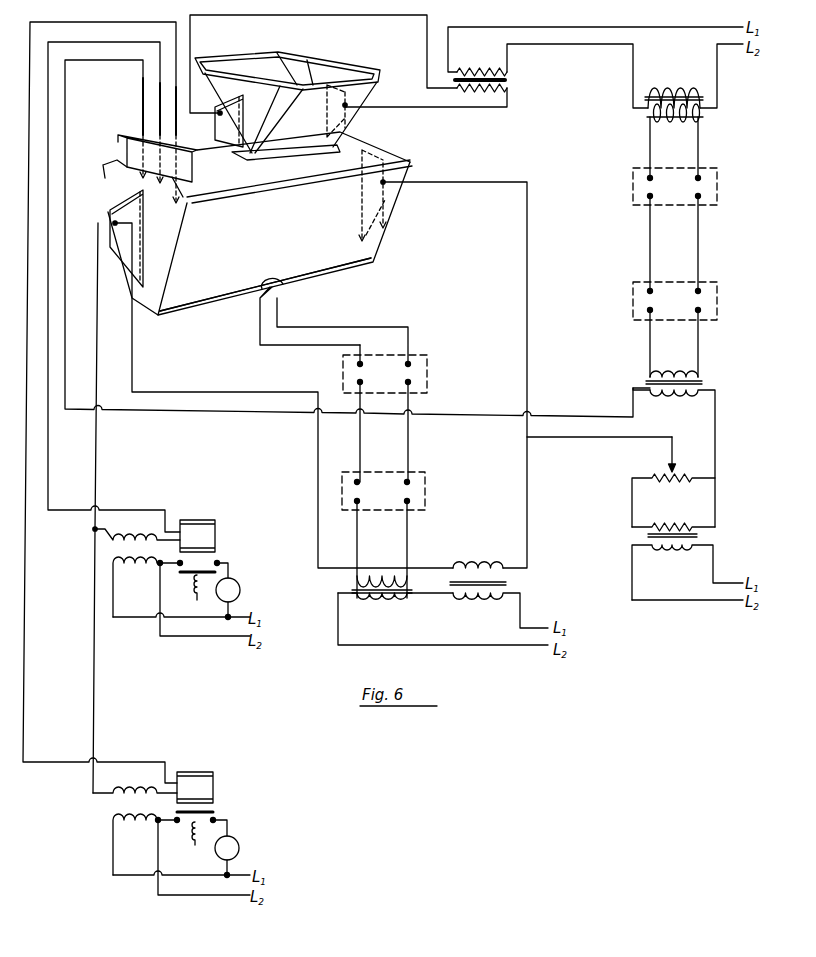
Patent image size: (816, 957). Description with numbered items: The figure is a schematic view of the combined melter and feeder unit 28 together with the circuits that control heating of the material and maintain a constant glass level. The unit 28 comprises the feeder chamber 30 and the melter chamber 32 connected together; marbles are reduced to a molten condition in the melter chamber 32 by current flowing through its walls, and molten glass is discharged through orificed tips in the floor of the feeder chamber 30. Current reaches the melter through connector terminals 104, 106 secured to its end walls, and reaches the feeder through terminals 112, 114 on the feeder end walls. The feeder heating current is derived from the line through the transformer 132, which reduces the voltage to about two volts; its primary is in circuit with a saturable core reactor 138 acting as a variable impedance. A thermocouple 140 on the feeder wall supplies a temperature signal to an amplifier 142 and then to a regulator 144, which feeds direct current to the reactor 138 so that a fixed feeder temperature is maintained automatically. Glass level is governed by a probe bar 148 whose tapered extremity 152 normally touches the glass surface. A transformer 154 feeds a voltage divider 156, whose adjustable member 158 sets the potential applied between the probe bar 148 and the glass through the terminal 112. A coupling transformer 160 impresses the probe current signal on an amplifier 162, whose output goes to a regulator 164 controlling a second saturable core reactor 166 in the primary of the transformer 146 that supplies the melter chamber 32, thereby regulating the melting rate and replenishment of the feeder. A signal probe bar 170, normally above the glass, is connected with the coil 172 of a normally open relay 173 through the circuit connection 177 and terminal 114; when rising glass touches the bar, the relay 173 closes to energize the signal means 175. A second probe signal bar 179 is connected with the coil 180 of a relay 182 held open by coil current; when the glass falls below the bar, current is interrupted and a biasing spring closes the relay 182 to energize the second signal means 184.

The combined melter and feeder unit 28 is at (360, 271).
The feeder chamber 30 is at (287, 243).
The melter chamber 32 is at (340, 43).
The connector terminal 104 is at (368, 95).
The connector terminal 106 is at (220, 125).
The terminal 112 is at (378, 214).
The terminal 114 is at (117, 203).
The transformer 132 is at (516, 584).
The saturable core reactor 138 is at (352, 584).
The thermocouple 140 is at (282, 284).
The amplifier 142 is at (427, 360).
The regulator 144 is at (425, 477).
The transformer 146 is at (508, 80).
The probe bar 148 is at (140, 80).
The tapered extremity 152 is at (128, 172).
The transformer 154 is at (704, 535).
The voltage divider 156 is at (667, 466).
The adjustable member 158 is at (680, 466).
The coupling transformer 160 is at (650, 376).
The amplifier 162 is at (633, 296).
The regulator 164 is at (633, 183).
The saturable core reactor 166 is at (645, 112).
The signal probe bar 170 is at (157, 99).
The relay coil 172 is at (155, 534).
The relay 173 is at (226, 556).
The signal means 175 is at (240, 583).
The circuit connection 177 is at (95, 604).
The second probe signal bar 179 is at (173, 118).
The relay coil 180 is at (153, 787).
The relay 182 is at (220, 804).
The second signal means 184 is at (239, 838).